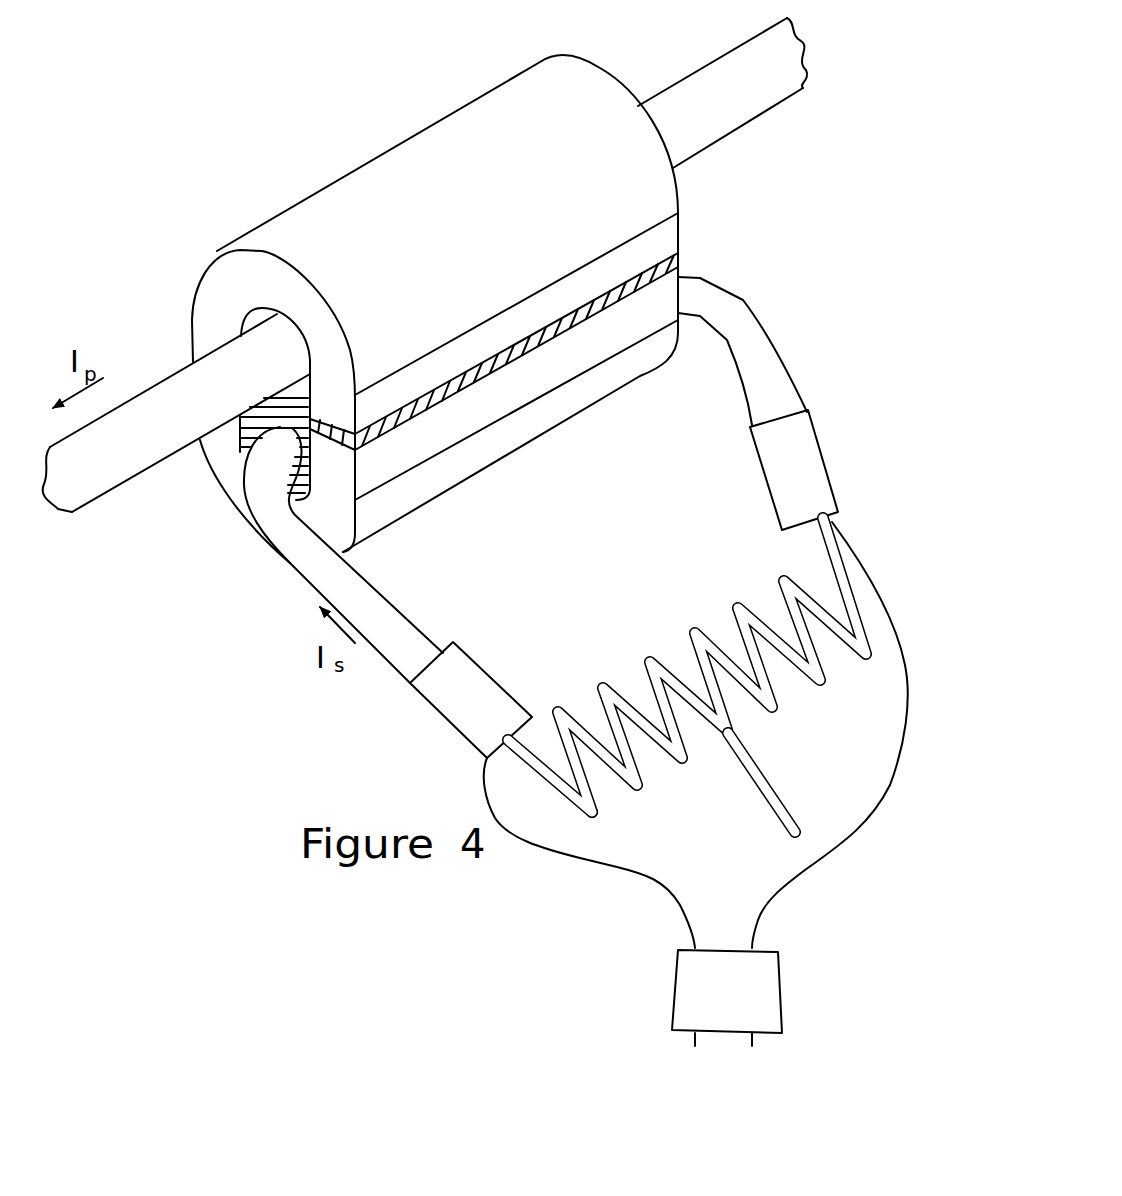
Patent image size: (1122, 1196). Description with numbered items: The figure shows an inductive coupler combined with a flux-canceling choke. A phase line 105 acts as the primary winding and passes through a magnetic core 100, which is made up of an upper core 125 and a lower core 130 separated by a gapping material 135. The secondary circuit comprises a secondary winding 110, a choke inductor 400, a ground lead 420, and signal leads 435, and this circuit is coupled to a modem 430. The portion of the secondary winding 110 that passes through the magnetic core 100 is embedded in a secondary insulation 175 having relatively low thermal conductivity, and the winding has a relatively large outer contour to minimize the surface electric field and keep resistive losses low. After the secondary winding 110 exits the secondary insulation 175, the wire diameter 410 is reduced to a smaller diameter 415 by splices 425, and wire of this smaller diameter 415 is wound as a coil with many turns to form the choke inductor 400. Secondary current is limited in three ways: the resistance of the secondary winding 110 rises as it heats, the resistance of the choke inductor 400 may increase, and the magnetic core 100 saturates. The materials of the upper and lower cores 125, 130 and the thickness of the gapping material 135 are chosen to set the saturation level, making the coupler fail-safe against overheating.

The magnetic core 100 is at (350, 172).
The phase line 105 is at (130, 390).
The secondary winding 110 is at (290, 540).
The upper core 125 is at (207, 255).
The lower core 130 is at (405, 521).
The gapping material 135 is at (684, 256).
The secondary insulation 175 is at (238, 446).
The choke inductor 400 is at (686, 669).
The diameter 410 is at (262, 446).
The smaller diameter 415 is at (526, 766).
The ground lead 420 is at (774, 773).
The splices 425 is at (762, 502).
The modem 430 is at (788, 982).
The signal leads 435 is at (766, 886).